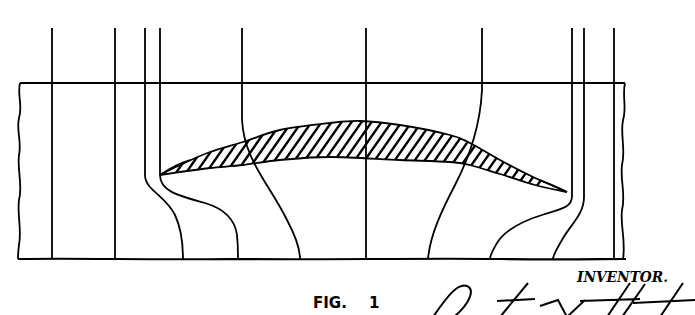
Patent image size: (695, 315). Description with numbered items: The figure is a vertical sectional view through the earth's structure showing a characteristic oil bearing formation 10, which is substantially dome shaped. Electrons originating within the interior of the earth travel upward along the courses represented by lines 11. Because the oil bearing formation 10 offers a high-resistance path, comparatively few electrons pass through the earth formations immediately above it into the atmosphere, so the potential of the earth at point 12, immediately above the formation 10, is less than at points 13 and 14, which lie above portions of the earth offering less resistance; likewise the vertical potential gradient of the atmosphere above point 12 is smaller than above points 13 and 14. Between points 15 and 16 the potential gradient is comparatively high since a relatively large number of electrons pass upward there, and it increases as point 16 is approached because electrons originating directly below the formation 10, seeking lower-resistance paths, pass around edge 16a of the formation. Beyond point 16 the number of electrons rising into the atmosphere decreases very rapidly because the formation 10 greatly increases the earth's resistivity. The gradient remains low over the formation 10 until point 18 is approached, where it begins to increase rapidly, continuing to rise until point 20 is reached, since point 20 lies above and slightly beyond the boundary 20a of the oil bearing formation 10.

The oil bearing formation 10 is at (436, 134).
The lines 11 is at (283, 236).
The point 12 is at (366, 82).
The point 13 is at (115, 82).
The point 14 is at (614, 82).
The point 15 is at (20, 83).
The point 16 is at (161, 81).
The edge 16a is at (162, 177).
The point 18 is at (481, 82).
The point 20 is at (572, 82).
The boundary 20a is at (566, 193).